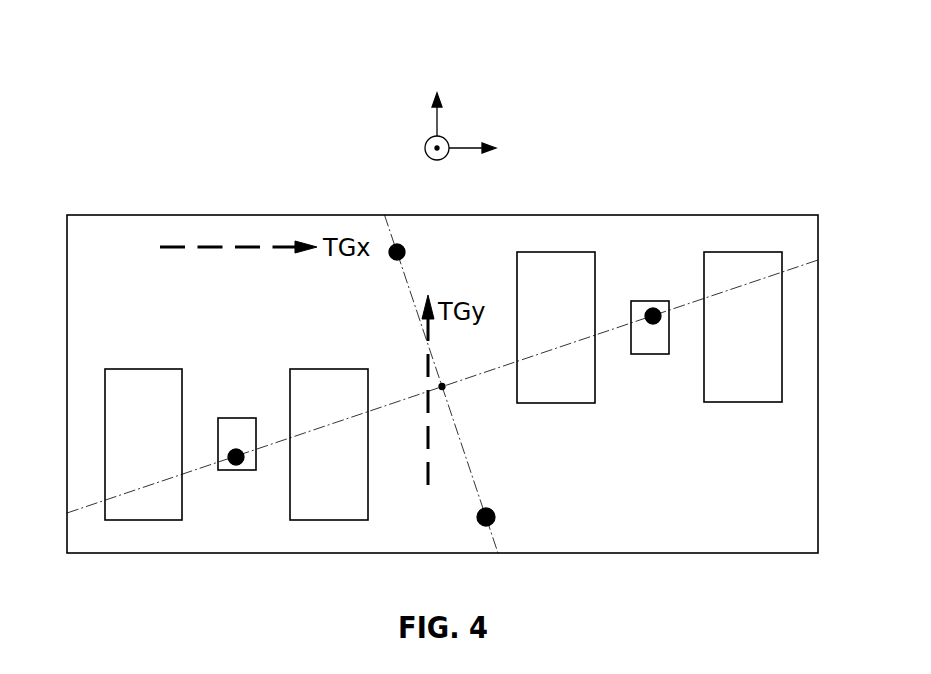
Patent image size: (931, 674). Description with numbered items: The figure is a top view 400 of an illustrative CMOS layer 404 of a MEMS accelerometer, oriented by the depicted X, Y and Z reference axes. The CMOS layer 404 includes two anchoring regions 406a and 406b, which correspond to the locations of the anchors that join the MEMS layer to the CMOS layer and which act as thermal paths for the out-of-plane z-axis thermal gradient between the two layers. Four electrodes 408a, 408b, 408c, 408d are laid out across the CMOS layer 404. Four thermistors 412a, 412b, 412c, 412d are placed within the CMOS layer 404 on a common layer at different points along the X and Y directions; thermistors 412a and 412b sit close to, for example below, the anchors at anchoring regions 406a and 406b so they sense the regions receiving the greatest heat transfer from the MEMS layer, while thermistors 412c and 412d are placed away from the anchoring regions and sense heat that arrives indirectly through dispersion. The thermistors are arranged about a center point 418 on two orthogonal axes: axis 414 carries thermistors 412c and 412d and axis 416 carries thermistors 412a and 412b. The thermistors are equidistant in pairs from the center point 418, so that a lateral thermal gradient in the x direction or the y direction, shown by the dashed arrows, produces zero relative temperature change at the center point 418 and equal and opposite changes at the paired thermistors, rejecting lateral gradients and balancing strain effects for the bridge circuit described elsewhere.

The top view 400 is at (466, 36).
The CMOS layer 404 is at (67, 251).
The anchoring region 406a is at (232, 418).
The anchoring region 406b is at (648, 355).
The electrode 408a is at (152, 369).
The electrode 408b is at (345, 369).
The electrode 408c is at (560, 403).
The electrode 408d is at (753, 403).
The thermistor 412a is at (241, 466).
The thermistor 412b is at (645, 317).
The thermistor 412c is at (405, 249).
The thermistor 412d is at (492, 507).
The orthogonal axis 414 is at (500, 546).
The orthogonal axis 416 is at (80, 500).
The center point 418 is at (449, 387).